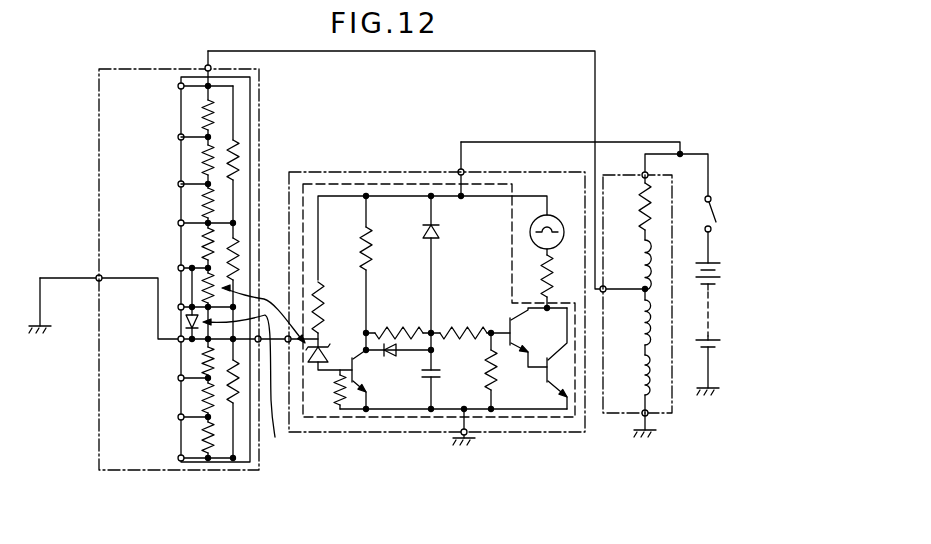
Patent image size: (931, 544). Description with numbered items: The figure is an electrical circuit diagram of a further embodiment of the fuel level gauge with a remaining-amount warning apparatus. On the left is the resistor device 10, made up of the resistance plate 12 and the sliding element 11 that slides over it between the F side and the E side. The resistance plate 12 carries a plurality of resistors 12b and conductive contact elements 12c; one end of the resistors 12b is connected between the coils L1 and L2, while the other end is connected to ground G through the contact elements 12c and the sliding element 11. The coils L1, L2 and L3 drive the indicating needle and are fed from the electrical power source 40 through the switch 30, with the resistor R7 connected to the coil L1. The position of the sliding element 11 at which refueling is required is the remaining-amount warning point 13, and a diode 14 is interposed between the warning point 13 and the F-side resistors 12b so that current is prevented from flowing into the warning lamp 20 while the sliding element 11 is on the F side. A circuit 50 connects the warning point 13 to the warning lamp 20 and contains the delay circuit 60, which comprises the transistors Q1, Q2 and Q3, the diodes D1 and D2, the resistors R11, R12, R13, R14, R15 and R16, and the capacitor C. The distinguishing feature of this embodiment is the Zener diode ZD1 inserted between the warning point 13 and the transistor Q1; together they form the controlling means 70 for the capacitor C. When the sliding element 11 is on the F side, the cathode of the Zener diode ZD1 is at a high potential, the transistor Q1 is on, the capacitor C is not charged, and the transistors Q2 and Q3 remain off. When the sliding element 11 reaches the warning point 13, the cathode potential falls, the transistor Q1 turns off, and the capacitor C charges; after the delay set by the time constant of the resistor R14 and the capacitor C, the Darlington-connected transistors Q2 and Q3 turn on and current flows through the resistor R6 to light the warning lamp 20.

The resistor device 10 is at (94, 174).
The sliding element 11 is at (175, 343).
The resistance plate 12 is at (192, 66).
The resistors 12b is at (216, 124).
The contact elements 12c is at (192, 142).
The remaining-amount warning point 13 is at (187, 335).
The diode 14 is at (254, 394).
The warning lamp 20 is at (565, 212).
The switch 30 is at (716, 208).
The electrical power source 40 is at (723, 271).
The circuit 50 is at (397, 432).
The delay circuit 60 is at (389, 180).
The controlling means 70 is at (277, 300).
The ground G is at (40, 322).
The resistor R6 is at (560, 278).
The resistor R7 is at (638, 202).
The resistor R11 is at (335, 314).
The resistor R12 is at (326, 390).
The resistor R13 is at (384, 273).
The resistor R14 is at (403, 320).
The resistor R15 is at (475, 320).
The resistor R16 is at (509, 371).
The Zener diode ZD1 is at (332, 350).
The diode D1 is at (398, 365).
The diode D2 is at (446, 283).
The capacitor C is at (441, 386).
The transistor Q1 is at (373, 380).
The transistor Q2 is at (538, 337).
The transistor Q3 is at (550, 359).
The coil L1 is at (633, 265).
The coil L2 is at (640, 326).
The coil L3 is at (639, 382).